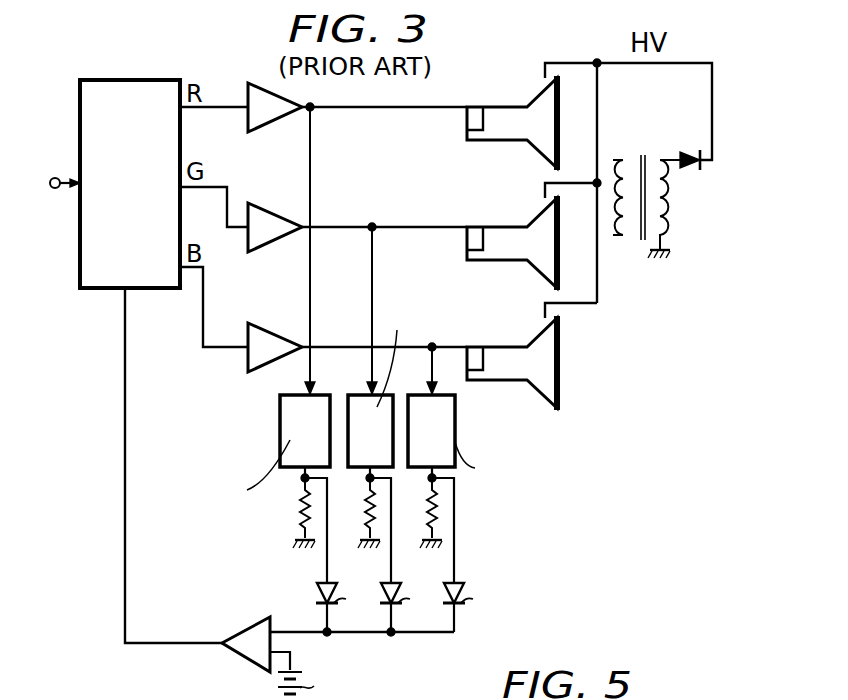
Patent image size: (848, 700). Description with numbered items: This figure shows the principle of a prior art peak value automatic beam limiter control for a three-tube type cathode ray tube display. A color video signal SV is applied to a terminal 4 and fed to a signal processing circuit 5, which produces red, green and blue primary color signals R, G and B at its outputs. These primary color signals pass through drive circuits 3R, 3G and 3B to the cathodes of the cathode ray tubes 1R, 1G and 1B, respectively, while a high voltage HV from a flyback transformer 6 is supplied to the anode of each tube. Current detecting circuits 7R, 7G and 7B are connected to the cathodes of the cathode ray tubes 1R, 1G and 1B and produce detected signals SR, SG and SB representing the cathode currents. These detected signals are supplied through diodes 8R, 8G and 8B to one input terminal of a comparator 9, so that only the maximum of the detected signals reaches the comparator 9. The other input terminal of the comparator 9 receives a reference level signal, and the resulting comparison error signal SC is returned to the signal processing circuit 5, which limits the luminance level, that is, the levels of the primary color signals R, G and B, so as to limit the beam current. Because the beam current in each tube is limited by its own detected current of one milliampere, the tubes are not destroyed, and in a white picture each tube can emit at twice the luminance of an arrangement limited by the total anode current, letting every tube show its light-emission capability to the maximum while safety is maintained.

The red cathode ray tube 1R is at (495, 142).
The green cathode ray tube 1G is at (495, 262).
The blue cathode ray tube 1B is at (500, 382).
The drive circuit 3R is at (272, 132).
The drive circuit 3G is at (272, 252).
The drive circuit 3B is at (249, 355).
The terminal 4 is at (54, 189).
The signal processing circuit 5 is at (88, 290).
The flyback transformer 6 is at (640, 284).
The current detecting circuit 7R is at (280, 417).
The current detecting circuit 7G is at (357, 396).
The current detecting circuit 7B is at (417, 396).
The diode 8R is at (324, 557).
The diode 8G is at (392, 557).
The diode 8B is at (460, 558).
The comparator 9 is at (240, 660).